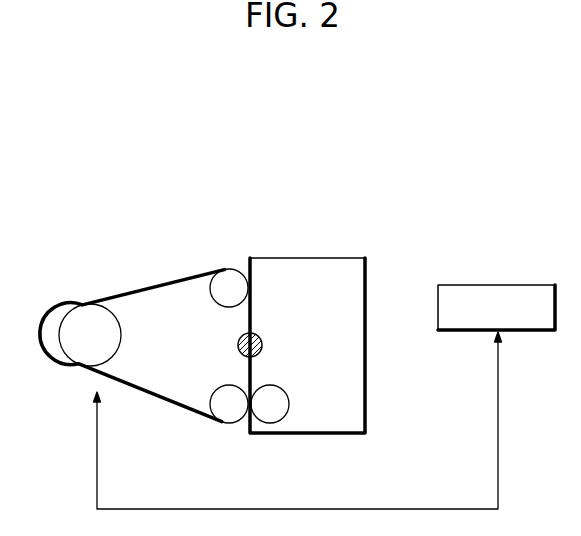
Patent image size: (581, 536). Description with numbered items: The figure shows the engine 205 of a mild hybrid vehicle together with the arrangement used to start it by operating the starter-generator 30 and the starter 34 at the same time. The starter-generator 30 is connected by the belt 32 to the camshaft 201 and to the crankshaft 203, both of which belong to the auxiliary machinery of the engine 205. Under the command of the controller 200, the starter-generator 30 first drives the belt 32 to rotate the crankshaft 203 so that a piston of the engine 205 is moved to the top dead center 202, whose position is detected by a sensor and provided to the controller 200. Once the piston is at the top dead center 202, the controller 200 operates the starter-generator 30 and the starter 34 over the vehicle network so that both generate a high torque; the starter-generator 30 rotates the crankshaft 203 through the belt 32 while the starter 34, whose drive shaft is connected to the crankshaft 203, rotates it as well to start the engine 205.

The starter-generator 30 is at (75, 321).
The belt 32 is at (131, 293).
The starter 34 is at (268, 417).
The controller 200 is at (530, 285).
The camshaft 201 is at (229, 275).
The top dead center 202 is at (256, 336).
The crankshaft 203 is at (228, 413).
The engine 205 is at (335, 257).